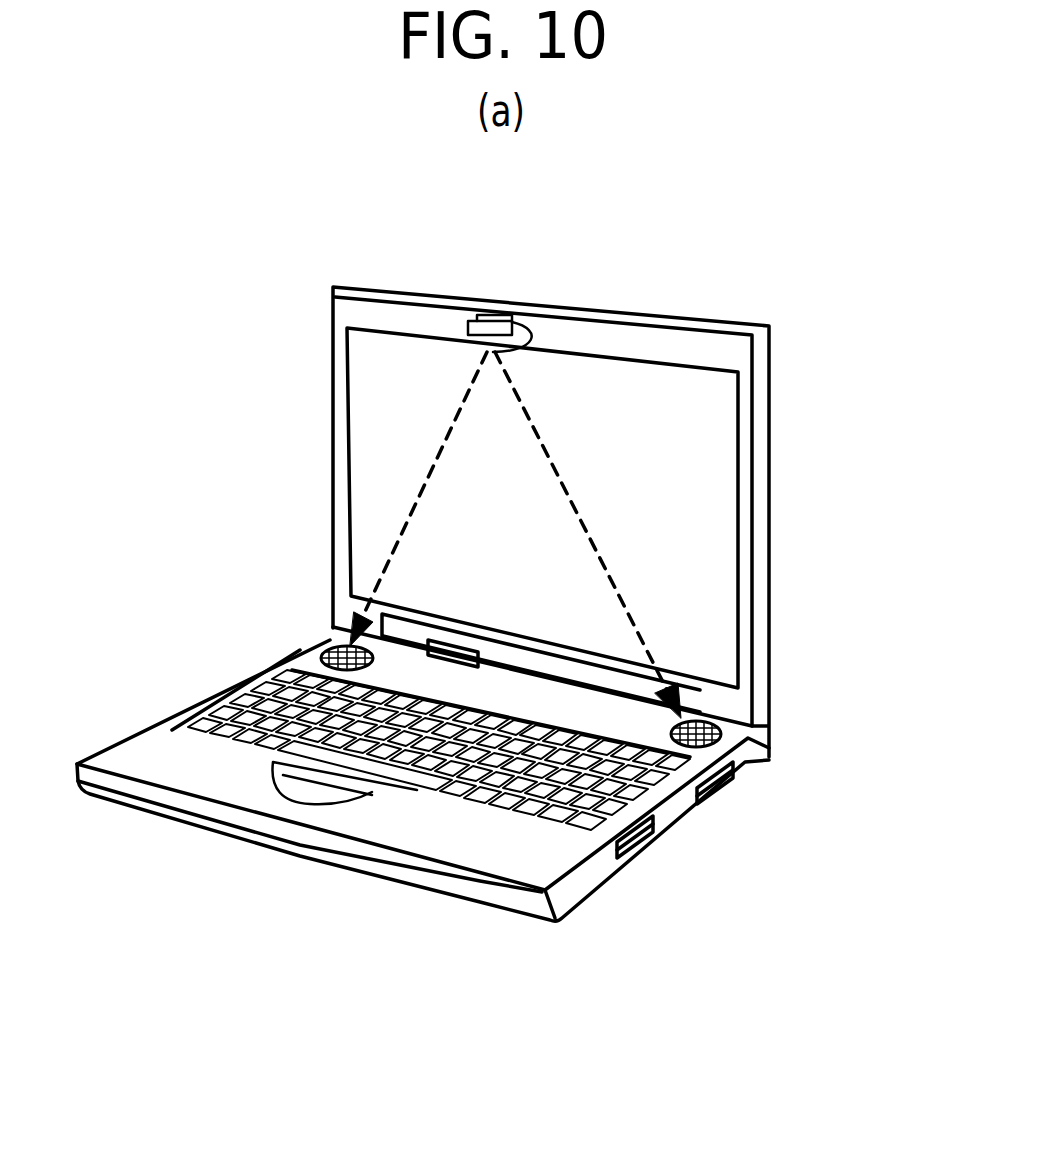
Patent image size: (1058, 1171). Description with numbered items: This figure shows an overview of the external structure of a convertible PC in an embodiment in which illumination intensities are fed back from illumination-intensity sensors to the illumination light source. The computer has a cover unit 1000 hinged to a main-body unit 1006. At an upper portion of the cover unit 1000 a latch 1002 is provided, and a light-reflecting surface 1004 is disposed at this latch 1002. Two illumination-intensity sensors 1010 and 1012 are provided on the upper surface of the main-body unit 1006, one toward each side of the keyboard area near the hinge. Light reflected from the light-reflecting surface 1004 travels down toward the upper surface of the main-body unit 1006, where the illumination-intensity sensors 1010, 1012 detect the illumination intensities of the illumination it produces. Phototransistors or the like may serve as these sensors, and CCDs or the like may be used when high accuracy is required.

The cover unit 1000 is at (770, 463).
The latch 1002 is at (480, 316).
The light-reflecting surface 1004 is at (537, 333).
The main-body unit 1006 is at (447, 897).
The illumination-intensity sensor 1010 is at (721, 737).
The illumination-intensity sensor 1012 is at (328, 644).